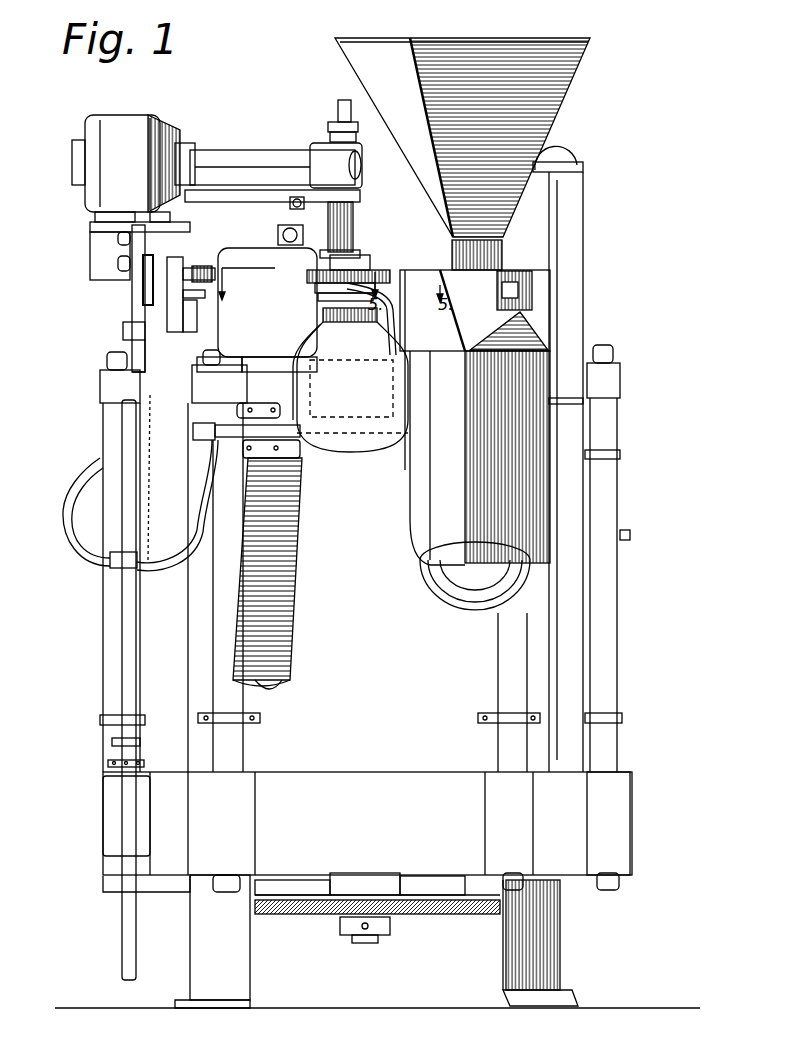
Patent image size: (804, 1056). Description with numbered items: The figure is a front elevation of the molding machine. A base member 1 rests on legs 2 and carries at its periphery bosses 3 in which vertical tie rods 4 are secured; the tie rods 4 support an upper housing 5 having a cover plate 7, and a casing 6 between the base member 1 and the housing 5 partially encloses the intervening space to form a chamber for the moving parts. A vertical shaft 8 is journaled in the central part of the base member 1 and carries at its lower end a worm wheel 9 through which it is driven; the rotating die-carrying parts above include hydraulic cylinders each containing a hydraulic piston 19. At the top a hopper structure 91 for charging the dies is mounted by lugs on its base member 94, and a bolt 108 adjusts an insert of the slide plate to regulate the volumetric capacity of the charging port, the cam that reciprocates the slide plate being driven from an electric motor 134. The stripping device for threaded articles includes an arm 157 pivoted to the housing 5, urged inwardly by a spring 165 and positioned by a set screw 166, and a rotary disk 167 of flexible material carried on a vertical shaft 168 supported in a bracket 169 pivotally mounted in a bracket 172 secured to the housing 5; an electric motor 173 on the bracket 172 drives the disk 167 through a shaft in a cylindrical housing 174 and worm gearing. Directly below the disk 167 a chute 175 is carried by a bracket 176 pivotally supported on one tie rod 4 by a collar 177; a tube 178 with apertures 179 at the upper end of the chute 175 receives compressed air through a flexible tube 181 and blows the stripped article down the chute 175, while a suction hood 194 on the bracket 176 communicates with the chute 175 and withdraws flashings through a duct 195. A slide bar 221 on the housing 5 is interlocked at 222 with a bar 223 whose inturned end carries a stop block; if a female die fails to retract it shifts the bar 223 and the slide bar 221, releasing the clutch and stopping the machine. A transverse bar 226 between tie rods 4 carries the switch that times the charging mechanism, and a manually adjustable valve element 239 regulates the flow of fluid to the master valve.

The base member 1 is at (362, 790).
The legs 2 is at (200, 955).
The bosses 3 is at (103, 825).
The vertical tie rods 4 is at (210, 580).
The upper housing 5 is at (583, 232).
The casing 6 is at (578, 497).
The cover plate 7 is at (563, 140).
The vertical shaft 8 is at (360, 944).
The worm wheel 9 is at (460, 915).
The hydraulic piston 19 is at (142, 729).
The hopper structure 91 is at (509, 48).
The base member of the hopper 94 is at (495, 252).
The bolt 108 is at (522, 292).
The electric motor 134 is at (430, 595).
The arm 157 is at (148, 292).
The spring 165 is at (197, 268).
The set screw 166 is at (210, 262).
The rotary disk 167 is at (312, 282).
The vertical shaft 168 is at (355, 237).
The bracket 169 is at (245, 192).
The bracket 172 is at (95, 251).
The electric motor 173 is at (128, 120).
The cylindrical housing 174 is at (200, 152).
The chute 175 is at (354, 447).
The bracket 176 is at (196, 433).
The collar 177 is at (205, 492).
The tube 178 is at (393, 305).
The apertures 179 is at (322, 298).
The flexible tube 181 is at (95, 562).
The suction hood 194 is at (241, 250).
The duct 195 is at (300, 552).
The slide bar 221 is at (143, 352).
The interlock 222 is at (123, 326).
The bar 223 is at (196, 318).
The transverse bar 226 is at (632, 535).
The manually adjustable valve element 239 is at (112, 743).